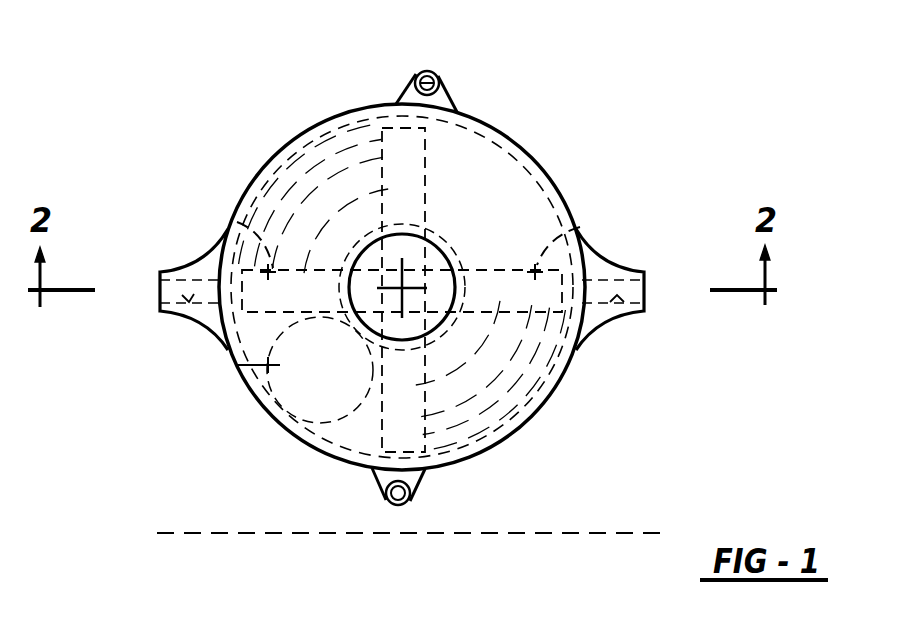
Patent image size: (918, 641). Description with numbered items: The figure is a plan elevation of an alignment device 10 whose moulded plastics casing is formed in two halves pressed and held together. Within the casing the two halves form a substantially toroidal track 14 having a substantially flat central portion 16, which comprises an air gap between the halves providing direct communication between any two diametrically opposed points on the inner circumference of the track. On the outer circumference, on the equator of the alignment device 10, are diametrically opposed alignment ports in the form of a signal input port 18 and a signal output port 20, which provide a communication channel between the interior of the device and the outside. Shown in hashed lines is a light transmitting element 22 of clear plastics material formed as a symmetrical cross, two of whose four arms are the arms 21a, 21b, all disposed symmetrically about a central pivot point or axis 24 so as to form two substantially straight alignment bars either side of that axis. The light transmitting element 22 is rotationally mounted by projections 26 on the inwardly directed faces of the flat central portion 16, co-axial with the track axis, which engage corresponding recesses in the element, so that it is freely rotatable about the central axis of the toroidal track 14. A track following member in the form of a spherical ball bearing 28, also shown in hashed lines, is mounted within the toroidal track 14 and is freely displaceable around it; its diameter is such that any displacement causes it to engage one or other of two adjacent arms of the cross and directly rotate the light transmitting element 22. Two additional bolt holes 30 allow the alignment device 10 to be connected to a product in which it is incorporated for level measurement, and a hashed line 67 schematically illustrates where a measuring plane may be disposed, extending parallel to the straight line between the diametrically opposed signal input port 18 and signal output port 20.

The alignment device 10 is at (570, 72).
The toroidal track 14 is at (522, 172).
The flat central portion 16 is at (427, 287).
The signal input port 18 is at (150, 307).
The signal output port 20 is at (655, 305).
The arm 21a is at (230, 225).
The arm 21b is at (582, 228).
The light transmitting element 22 is at (356, 116).
The central pivot point or axis 24 is at (408, 330).
The projections 26 is at (392, 283).
The spherical ball bearing 28 is at (232, 360).
The bolt holes 30 is at (444, 80).
The hashed line 67 is at (248, 536).